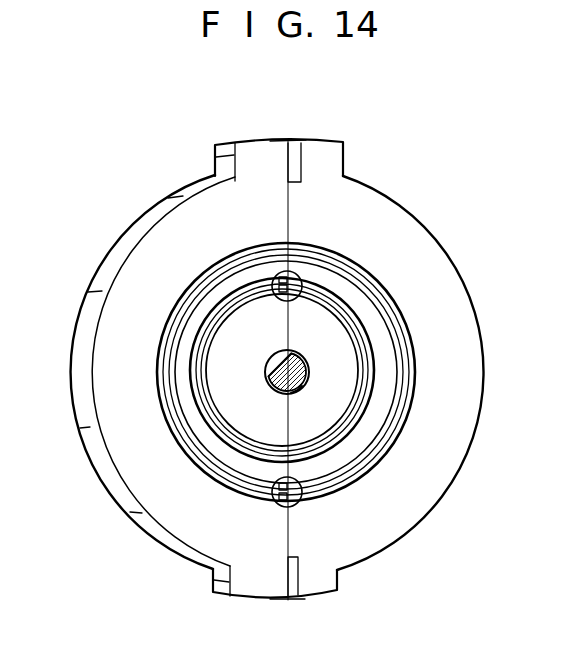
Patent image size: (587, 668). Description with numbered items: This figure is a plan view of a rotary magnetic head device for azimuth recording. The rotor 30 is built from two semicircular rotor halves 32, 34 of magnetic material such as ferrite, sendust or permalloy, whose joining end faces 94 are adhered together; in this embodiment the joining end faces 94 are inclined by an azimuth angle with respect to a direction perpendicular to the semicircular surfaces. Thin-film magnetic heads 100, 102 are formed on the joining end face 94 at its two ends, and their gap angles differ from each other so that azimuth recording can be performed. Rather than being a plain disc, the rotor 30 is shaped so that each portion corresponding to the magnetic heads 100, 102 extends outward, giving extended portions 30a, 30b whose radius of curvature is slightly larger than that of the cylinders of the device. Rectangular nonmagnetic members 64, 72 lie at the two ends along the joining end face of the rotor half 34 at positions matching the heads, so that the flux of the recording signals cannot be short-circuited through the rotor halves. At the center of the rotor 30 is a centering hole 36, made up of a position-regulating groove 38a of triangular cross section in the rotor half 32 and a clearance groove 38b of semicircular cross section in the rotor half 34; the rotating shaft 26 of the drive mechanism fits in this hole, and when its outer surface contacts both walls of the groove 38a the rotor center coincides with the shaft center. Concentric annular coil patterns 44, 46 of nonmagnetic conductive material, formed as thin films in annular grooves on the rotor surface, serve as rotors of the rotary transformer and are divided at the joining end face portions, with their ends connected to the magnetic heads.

The rotating shaft 26 is at (298, 373).
The rotor 30 is at (304, 368).
The extended portion 30a is at (325, 580).
The extended portion 30b is at (336, 160).
The rotor half 32 is at (115, 377).
The rotor half 34 is at (467, 380).
The centering hole 36 is at (296, 396).
The position-regulating groove 38a is at (272, 376).
The clearance groove 38b is at (293, 352).
The annular coil pattern 44 is at (365, 283).
The annular coil pattern 46 is at (372, 362).
The nonmagnetic member 64 is at (293, 588).
The nonmagnetic member 72 is at (296, 152).
The joining end face 94 is at (288, 534).
The thin-film magnetic head 100 is at (286, 599).
The thin-film magnetic head 102 is at (288, 142).